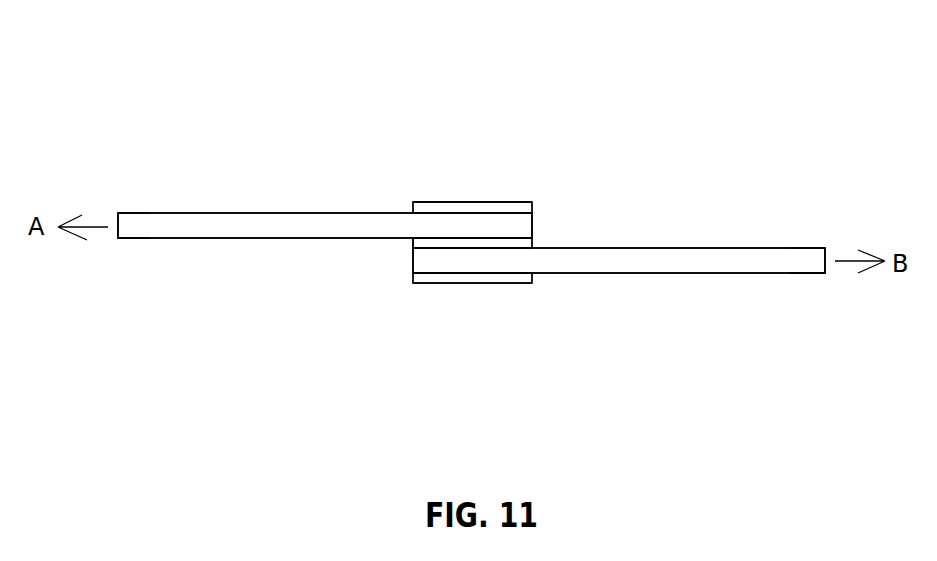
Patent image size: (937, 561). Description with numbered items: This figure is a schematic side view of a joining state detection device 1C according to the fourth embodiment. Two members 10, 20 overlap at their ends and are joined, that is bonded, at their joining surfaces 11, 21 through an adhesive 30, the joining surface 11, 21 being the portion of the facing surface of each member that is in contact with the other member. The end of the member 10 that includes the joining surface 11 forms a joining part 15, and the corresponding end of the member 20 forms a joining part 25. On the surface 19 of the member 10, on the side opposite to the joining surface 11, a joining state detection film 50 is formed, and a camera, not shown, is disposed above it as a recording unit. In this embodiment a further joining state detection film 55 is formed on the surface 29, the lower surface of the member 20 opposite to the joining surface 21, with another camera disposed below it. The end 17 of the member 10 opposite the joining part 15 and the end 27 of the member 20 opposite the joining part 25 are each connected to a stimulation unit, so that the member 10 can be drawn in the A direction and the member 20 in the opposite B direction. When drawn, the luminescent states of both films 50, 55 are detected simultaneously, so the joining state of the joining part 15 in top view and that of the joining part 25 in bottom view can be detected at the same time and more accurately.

The joining state detection device 1C is at (613, 132).
The member 10 is at (235, 212).
The joining part 15 is at (437, 227).
The joining state detection film 50 is at (455, 202).
The surface 19 is at (502, 212).
The joining surface 11 is at (524, 238).
The end 27 is at (802, 263).
The end 17 is at (142, 223).
The adhesive 30 is at (424, 245).
The joining part 25 is at (440, 262).
The joining state detection film 55 is at (457, 282).
The joining surface 21 is at (462, 251).
The surface 29 is at (502, 271).
The member 20 is at (565, 262).